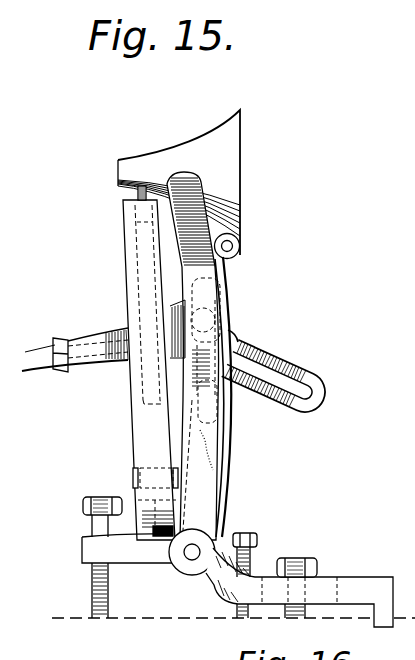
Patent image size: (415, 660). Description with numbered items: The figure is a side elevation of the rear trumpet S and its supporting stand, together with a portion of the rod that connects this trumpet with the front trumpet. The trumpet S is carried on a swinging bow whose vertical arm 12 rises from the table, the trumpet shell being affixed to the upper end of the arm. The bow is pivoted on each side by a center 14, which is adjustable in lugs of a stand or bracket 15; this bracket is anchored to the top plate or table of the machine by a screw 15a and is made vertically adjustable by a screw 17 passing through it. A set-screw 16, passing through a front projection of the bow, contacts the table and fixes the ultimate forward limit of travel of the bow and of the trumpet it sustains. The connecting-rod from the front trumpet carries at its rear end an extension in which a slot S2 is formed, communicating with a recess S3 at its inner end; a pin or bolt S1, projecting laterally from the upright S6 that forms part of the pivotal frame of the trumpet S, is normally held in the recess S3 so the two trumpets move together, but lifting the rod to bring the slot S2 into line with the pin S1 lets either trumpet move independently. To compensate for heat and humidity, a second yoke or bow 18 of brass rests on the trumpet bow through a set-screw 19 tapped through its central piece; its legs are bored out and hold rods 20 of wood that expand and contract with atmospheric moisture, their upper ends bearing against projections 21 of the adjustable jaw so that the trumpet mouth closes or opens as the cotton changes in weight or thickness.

The rear trumpet S is at (21, 352).
The pin or bolt S1 is at (217, 316).
The slot S2 is at (281, 368).
The recess S3 is at (224, 338).
The upright S6 is at (228, 463).
The vertical arm 12 is at (213, 431).
The center 14 is at (190, 556).
The stand or bracket 15 is at (299, 587).
The screw 15a is at (300, 558).
The set-screw 16 is at (83, 508).
The screw 17 is at (251, 536).
The second yoke or bow 18 is at (140, 389).
The set-screw 19 is at (138, 473).
The rods 20 is at (140, 293).
The projections 21 is at (138, 193).